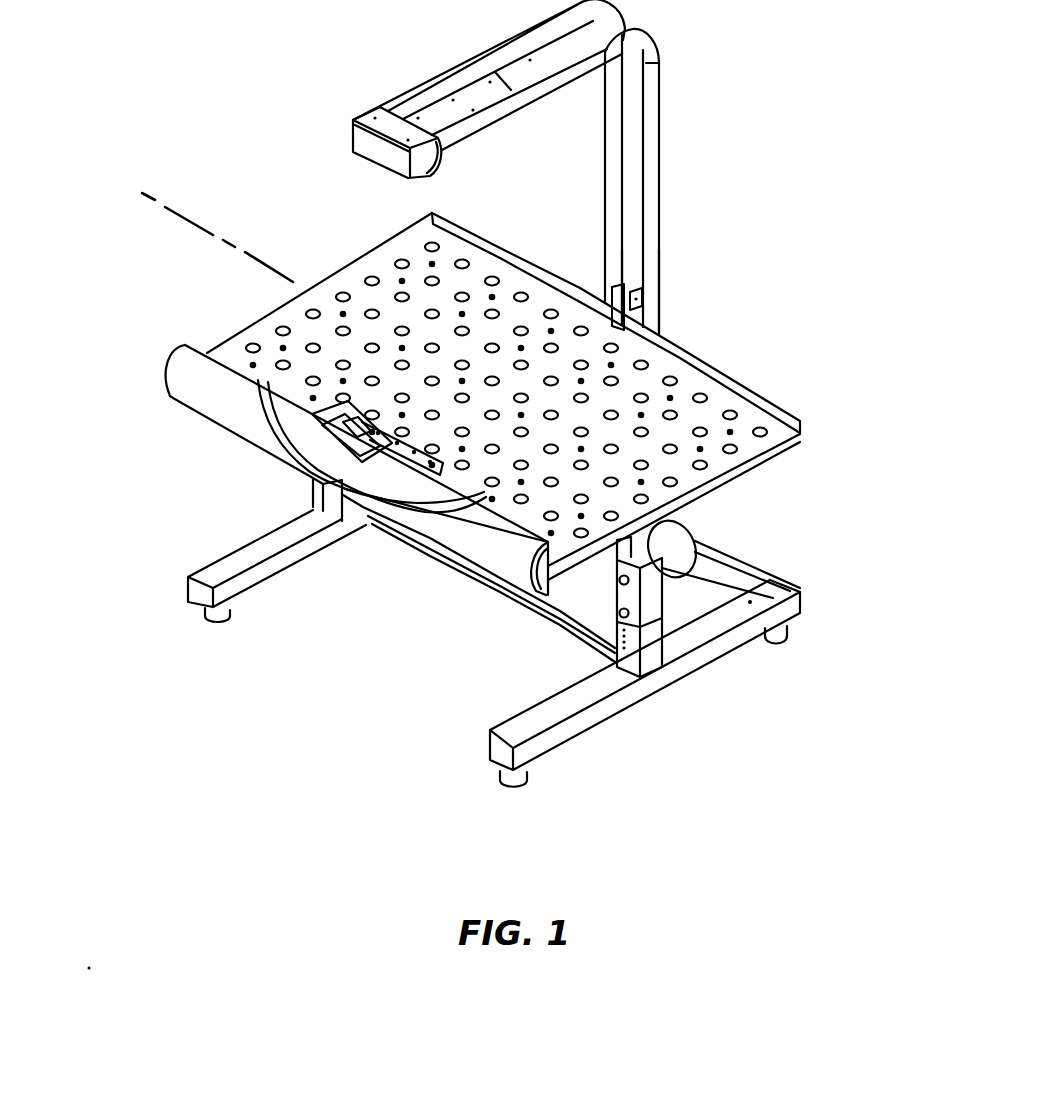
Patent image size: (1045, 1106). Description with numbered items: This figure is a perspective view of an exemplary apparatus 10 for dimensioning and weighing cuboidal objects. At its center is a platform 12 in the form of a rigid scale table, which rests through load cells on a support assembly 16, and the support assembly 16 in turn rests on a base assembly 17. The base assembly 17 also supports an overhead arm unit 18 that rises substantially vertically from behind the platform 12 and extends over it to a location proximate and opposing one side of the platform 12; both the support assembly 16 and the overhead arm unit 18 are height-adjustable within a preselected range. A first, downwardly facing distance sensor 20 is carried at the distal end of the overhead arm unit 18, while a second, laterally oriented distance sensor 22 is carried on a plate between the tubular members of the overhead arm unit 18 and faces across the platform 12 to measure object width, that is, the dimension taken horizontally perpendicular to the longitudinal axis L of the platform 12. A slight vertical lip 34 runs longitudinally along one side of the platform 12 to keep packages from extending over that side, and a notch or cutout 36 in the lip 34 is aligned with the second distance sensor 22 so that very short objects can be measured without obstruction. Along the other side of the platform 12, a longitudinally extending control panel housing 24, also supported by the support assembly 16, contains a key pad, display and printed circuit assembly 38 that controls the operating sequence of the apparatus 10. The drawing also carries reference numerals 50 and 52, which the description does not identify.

The apparatus 10 is at (250, 297).
The platform 12 is at (746, 418).
The support assembly 16 is at (695, 542).
The base assembly 17 is at (731, 628).
The overhead arm unit 18 is at (660, 112).
The first distance sensor 20 is at (353, 150).
The second distance sensor 22 is at (645, 289).
The control panel housing 24 is at (417, 488).
The vertical lip 34 is at (470, 222).
The notch or cutout 36 is at (614, 326).
The key pad, display and printed circuit assembly 38 is at (345, 473).
The apertures 50 is at (699, 467).
The front roller 52 is at (318, 407).
The longitudinal axis L is at (190, 212).